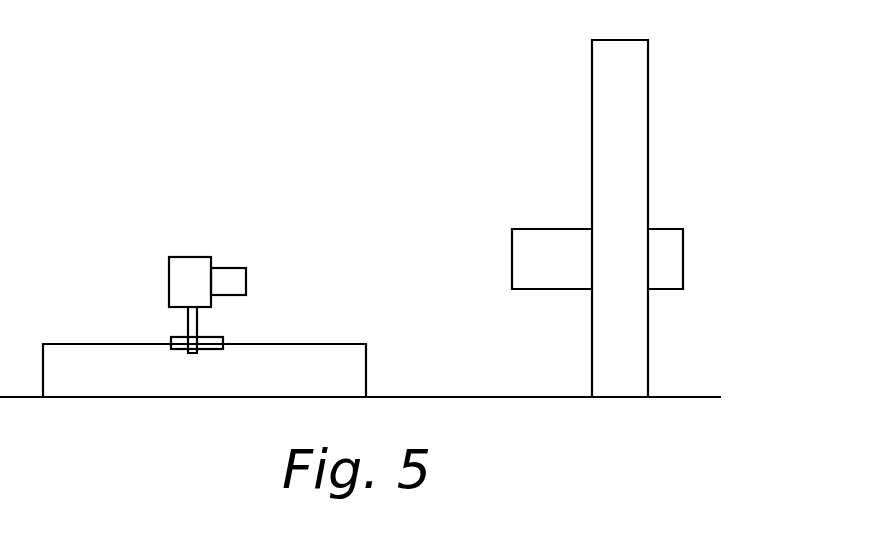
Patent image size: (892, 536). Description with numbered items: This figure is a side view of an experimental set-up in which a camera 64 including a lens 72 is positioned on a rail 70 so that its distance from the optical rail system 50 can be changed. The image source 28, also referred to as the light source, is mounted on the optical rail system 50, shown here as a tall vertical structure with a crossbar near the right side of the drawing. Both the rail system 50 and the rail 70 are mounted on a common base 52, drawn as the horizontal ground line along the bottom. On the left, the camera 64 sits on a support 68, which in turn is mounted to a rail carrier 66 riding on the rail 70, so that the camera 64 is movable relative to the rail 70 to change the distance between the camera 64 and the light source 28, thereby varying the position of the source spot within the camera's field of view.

The image source 28 is at (556, 216).
The optical rail system 50 is at (728, 94).
The common base 52 is at (459, 397).
The camera 64 is at (180, 262).
The rail carrier 66 is at (171, 339).
The support 68 is at (197, 322).
The rail 70 is at (320, 353).
The lens 72 is at (270, 168).